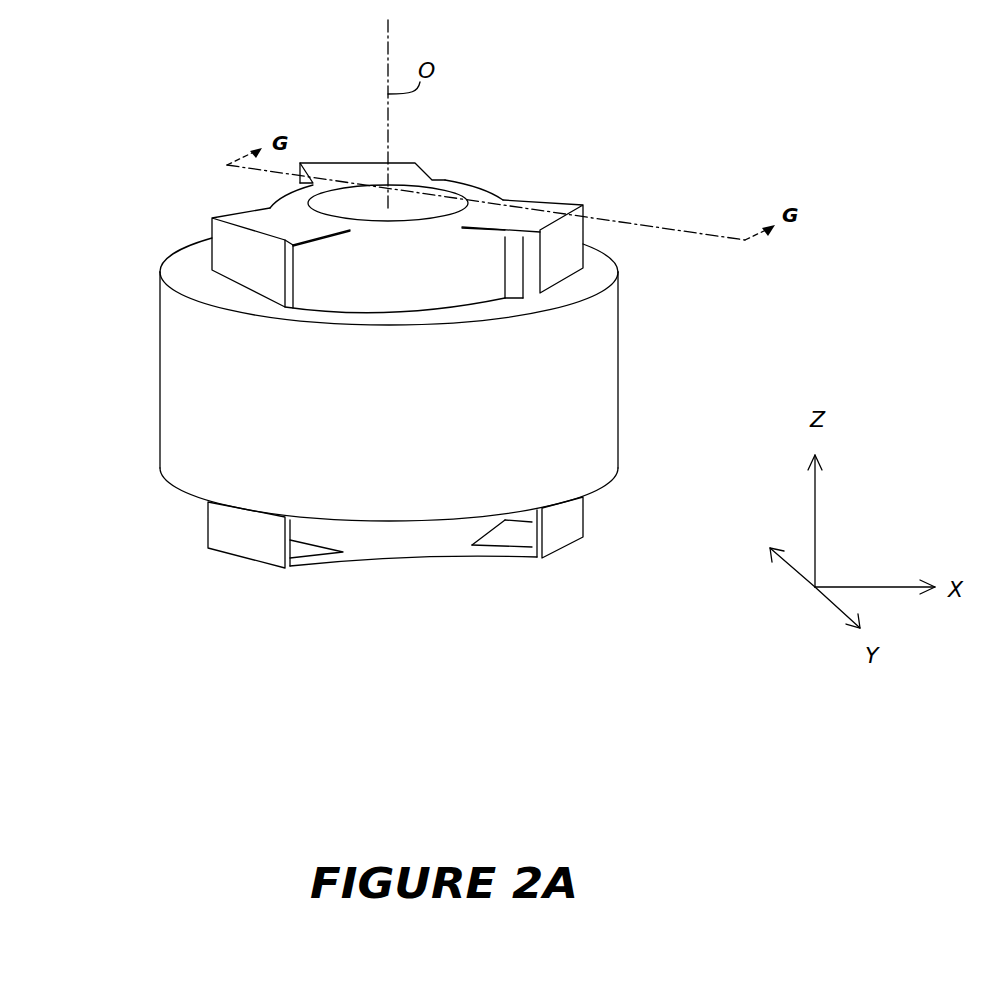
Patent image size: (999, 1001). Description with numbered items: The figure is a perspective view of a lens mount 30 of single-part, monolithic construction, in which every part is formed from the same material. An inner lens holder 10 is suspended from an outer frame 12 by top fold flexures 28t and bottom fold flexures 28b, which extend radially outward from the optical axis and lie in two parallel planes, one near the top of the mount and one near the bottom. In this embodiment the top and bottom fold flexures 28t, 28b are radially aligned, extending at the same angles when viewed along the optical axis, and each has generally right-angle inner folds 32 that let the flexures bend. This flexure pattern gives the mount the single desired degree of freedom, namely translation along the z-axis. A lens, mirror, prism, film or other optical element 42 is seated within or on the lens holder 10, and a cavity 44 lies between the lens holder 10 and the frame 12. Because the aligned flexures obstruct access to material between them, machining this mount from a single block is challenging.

The lens holder 10 is at (485, 190).
The frame 12 is at (158, 448).
The top fold flexures 28t is at (580, 218).
The bottom fold flexures 28b is at (218, 525).
The lens mount 30 is at (896, 201).
The inner folds 32 is at (293, 556).
The optical element 42 is at (440, 197).
The cavity 44 is at (437, 305).